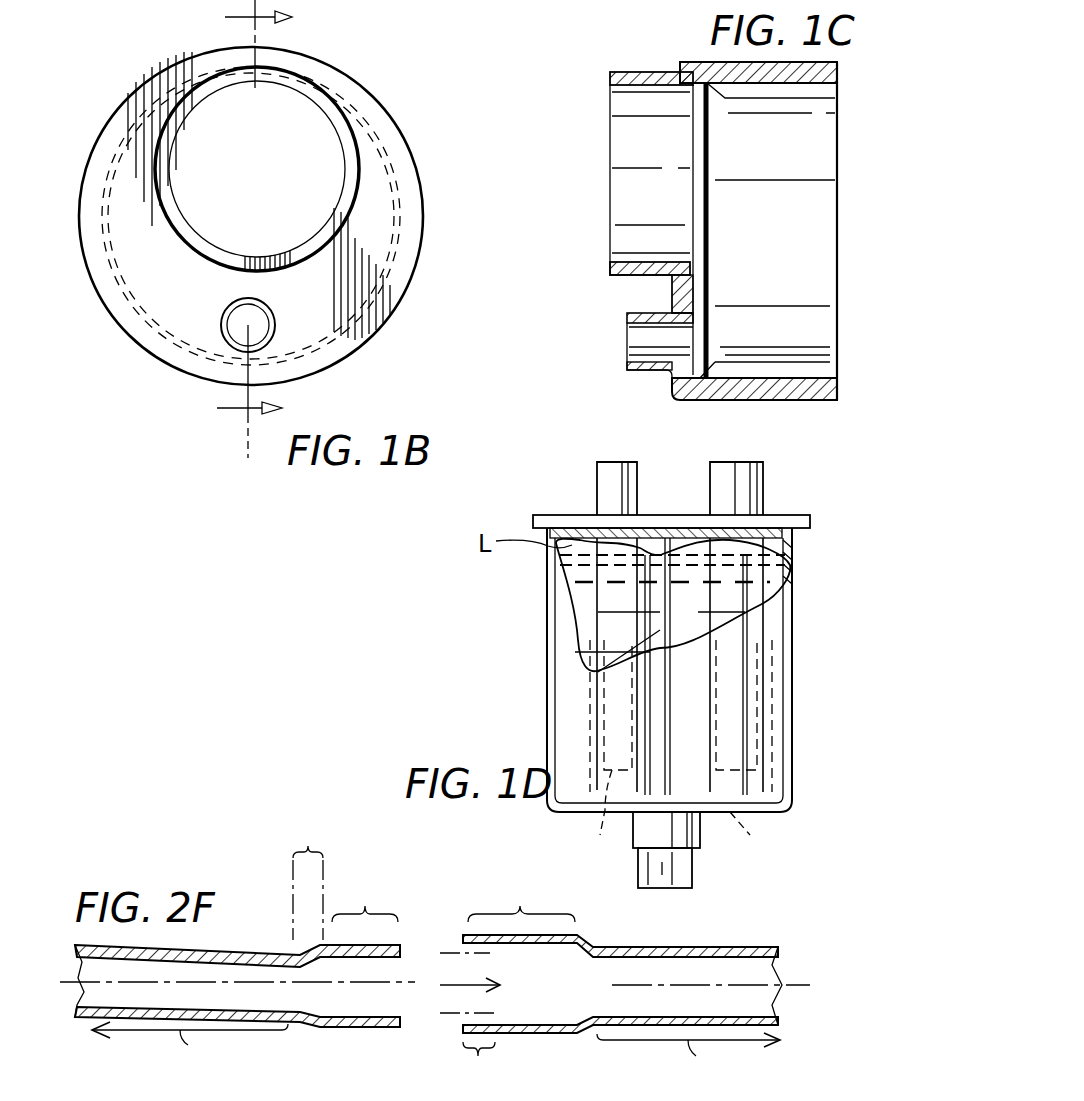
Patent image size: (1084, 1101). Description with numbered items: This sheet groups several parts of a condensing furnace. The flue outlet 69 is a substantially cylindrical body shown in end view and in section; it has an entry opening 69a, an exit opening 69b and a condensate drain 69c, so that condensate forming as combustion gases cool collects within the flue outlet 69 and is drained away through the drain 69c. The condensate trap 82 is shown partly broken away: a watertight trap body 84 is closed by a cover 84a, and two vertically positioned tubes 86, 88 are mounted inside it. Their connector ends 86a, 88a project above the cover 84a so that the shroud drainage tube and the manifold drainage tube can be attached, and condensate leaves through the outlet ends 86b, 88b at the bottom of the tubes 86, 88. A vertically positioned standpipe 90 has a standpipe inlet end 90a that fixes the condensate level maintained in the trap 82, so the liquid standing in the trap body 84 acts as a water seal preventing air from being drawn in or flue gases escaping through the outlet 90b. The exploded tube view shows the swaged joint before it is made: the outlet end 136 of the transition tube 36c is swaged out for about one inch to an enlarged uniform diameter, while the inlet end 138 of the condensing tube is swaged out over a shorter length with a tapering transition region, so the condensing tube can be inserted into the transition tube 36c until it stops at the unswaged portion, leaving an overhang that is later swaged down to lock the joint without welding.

In FIG. 1B, the flue outlet 69 is at (424, 226).
In FIG. 1C, the flue outlet 69 is at (670, 58).
In FIG. 1B, the entry opening 69a is at (278, 196).
In FIG. 1C, the entry opening 69a is at (632, 187).
In FIG. 1C, the exit opening 69b is at (793, 223).
In FIG. 1B, the condensate drain 69c is at (276, 318).
In FIG. 1C, the condensate drain 69c is at (648, 350).
In FIG. 1D, the condensate trap 82 is at (677, 670).
In FIG. 1D, the trap body 84 is at (775, 760).
In FIG. 1D, the cover 84a is at (672, 513).
In FIG. 1D, the tube 86 is at (598, 598).
In FIG. 1D, the connector end 86a is at (608, 477).
In FIG. 1D, the outlet end 86b is at (580, 815).
In FIG. 1D, the tube 88 is at (760, 598).
In FIG. 1D, the connector end 88a is at (745, 487).
In FIG. 1D, the outlet end 88b is at (767, 836).
In FIG. 1D, the standpipe 90 is at (622, 660).
In FIG. 1D, the standpipe inlet end 90a is at (780, 578).
In FIG. 1D, the outlet 90b is at (692, 870).
In FIG. 2F, the transition tube 36c is at (625, 984).
In FIG. 2F, the outlet end 136 is at (540, 1042).
In FIG. 2F, the inlet end 138 is at (400, 1005).